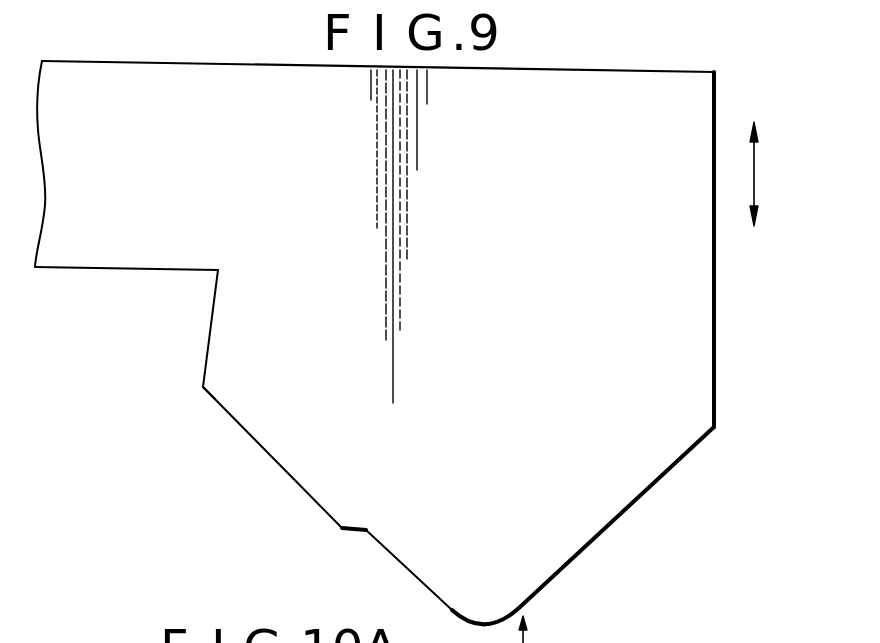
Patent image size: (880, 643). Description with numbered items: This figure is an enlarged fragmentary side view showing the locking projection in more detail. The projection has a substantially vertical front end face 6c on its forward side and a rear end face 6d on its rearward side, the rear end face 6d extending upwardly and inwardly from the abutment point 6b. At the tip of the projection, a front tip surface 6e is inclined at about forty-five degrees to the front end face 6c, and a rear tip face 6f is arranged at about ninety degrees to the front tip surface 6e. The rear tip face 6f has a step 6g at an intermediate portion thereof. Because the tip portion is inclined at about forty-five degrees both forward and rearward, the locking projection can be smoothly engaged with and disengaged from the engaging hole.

The abutment point 6b is at (201, 387).
The front end face 6c is at (717, 328).
The rear end face 6d is at (213, 302).
The front tip surface 6e is at (600, 537).
The rear tip face 6f is at (382, 548).
The step 6g is at (290, 478).